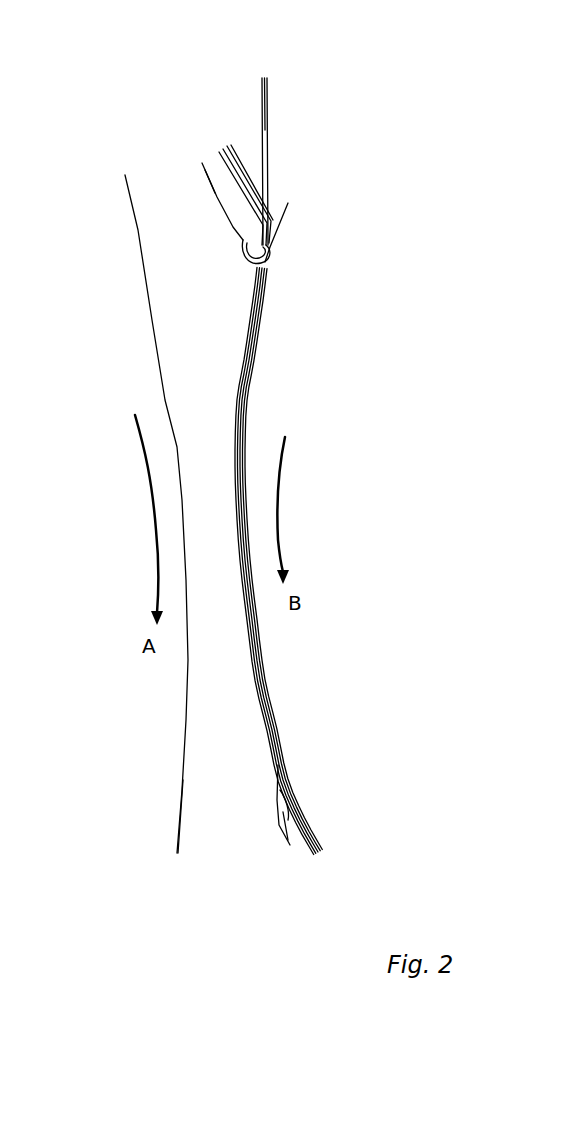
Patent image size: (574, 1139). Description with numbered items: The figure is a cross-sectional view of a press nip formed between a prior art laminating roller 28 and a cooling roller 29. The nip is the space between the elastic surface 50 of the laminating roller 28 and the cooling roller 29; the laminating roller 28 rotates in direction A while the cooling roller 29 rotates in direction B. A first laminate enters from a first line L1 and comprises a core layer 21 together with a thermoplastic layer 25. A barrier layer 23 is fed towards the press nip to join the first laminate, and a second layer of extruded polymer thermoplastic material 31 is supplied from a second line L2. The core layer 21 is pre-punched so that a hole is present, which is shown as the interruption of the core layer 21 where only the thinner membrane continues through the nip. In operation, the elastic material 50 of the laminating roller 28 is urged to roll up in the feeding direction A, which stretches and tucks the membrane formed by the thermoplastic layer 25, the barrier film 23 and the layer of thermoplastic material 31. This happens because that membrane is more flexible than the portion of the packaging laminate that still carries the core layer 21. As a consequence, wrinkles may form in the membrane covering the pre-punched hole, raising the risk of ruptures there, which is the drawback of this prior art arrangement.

The core layer 21 is at (233, 202).
The barrier layer 23 is at (233, 150).
The thermoplastic layer 25 is at (220, 150).
The laminating roller 28 is at (148, 812).
The cooling roller 29 is at (337, 812).
The layer of thermoplastic material 31 is at (270, 157).
The elastic surface 50 is at (139, 195).
The first line L1 is at (196, 151).
The second line L2 is at (283, 77).